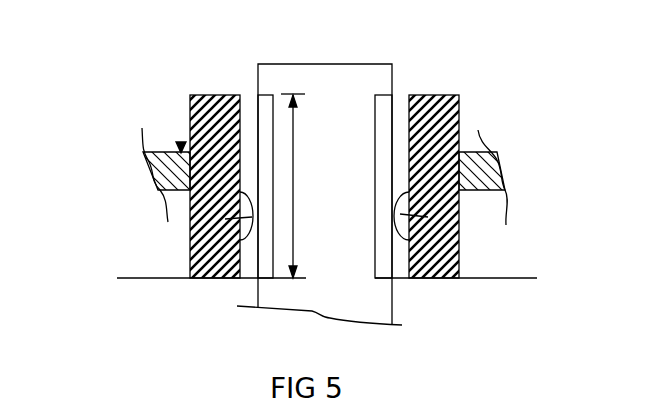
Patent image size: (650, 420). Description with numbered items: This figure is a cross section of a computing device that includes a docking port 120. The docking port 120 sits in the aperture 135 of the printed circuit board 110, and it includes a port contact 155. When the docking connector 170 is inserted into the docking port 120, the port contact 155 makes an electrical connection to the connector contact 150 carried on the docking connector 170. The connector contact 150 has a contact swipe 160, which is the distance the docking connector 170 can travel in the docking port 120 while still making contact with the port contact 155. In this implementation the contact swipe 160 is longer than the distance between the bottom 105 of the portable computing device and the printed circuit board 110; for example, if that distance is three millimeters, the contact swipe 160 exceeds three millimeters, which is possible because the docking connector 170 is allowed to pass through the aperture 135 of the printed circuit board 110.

The bottom of the portable computing device 105 is at (118, 278).
The printed circuit board 110 is at (152, 168).
The docking port 120 is at (203, 114).
The aperture 135 is at (181, 146).
The connector contact 150 is at (258, 93).
The port contact 155 is at (258, 222).
The contact swipe 160 is at (292, 255).
The docking connector 170 is at (280, 75).